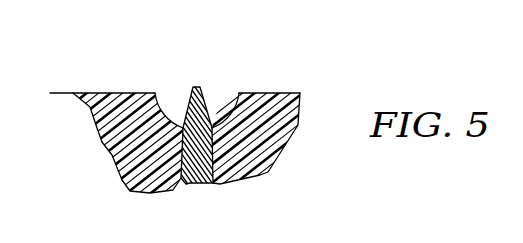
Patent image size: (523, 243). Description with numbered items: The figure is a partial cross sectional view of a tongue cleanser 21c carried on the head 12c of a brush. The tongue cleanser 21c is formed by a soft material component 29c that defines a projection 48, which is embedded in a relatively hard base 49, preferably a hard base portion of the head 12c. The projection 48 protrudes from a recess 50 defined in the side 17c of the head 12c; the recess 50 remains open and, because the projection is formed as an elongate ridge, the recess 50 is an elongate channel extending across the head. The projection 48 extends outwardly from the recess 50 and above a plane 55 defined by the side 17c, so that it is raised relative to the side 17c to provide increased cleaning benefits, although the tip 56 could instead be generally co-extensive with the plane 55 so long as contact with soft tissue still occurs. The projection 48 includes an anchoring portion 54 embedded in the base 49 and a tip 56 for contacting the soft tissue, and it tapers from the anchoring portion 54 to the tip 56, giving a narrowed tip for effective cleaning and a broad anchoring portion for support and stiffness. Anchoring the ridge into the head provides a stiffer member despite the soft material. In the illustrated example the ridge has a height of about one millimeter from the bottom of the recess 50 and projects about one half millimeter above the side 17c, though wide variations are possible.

The tongue cleanser 21c is at (111, 60).
The plane 55 is at (62, 92).
The recess 50 is at (100, 128).
The hard base 49 is at (117, 157).
The soft material component 29c is at (190, 95).
The tip 56 is at (198, 87).
The projection 48 is at (207, 112).
The anchoring portion 54 is at (186, 184).
The side 17c is at (289, 93).
The head 12c is at (285, 152).